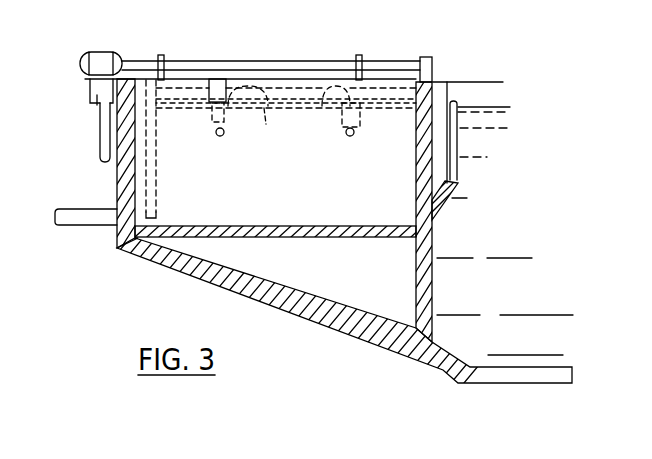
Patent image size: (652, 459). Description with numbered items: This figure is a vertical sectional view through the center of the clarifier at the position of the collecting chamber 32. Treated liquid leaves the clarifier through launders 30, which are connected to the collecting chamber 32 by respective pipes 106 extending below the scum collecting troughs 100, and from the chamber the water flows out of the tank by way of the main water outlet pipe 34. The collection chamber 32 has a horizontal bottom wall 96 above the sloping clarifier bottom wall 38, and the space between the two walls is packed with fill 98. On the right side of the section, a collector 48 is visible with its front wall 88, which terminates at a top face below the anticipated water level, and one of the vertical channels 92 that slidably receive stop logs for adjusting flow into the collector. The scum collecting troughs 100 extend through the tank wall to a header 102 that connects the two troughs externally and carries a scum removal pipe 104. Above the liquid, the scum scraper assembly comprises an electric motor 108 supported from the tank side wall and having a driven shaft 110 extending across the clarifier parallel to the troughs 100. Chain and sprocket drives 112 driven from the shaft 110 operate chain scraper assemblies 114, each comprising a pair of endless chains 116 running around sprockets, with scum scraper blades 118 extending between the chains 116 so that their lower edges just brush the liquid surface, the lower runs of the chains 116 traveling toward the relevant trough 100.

The launders 30 is at (307, 138).
The collection chamber 32 is at (388, 200).
The main water outlet pipe 34 is at (86, 210).
The inclined bottom wall 38 is at (307, 305).
The collector 48 is at (470, 145).
The front wall 88 is at (460, 173).
The vertical channel 92 is at (458, 120).
The horizontal bottom wall 96 is at (313, 225).
The fill 98 is at (389, 285).
The scum collecting trough 100 is at (225, 108).
The header 102 is at (97, 100).
The scum removal pipe 104 is at (100, 142).
The pipe 106 is at (219, 136).
The electric motor 108 is at (104, 55).
The driven shaft 110 is at (345, 62).
The chain and sprocket drive 112 is at (161, 59).
The chain scraper assembly 114 is at (222, 76).
The endless chain 116 is at (286, 116).
The scum scraper blade 118 is at (178, 110).